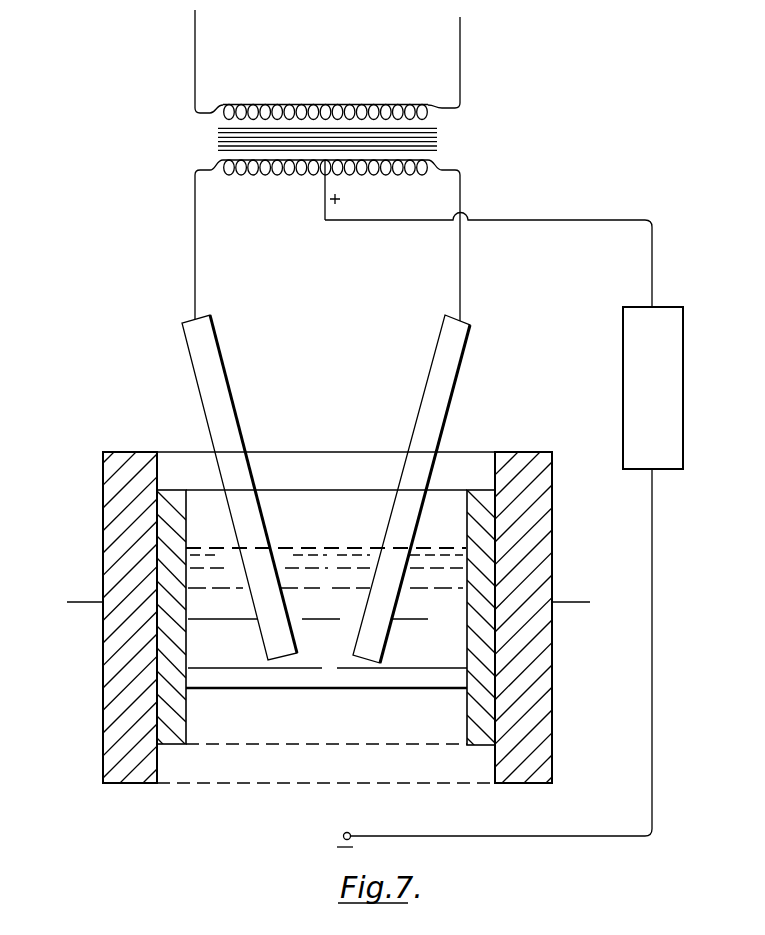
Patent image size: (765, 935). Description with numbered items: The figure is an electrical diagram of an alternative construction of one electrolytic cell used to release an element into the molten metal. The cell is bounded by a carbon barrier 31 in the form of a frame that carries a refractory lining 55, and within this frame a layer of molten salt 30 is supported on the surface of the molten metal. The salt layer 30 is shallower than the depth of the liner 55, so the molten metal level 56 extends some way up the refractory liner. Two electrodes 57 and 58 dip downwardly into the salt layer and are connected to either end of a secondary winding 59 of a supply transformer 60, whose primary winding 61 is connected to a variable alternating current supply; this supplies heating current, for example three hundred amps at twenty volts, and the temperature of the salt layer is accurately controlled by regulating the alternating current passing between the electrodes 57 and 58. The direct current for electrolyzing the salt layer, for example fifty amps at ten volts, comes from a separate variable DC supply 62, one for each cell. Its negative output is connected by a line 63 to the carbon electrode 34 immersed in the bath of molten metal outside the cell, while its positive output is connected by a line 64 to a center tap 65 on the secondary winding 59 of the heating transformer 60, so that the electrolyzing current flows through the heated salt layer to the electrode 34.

The layer of molten salt 30 is at (317, 557).
The carbon barrier 31 is at (540, 577).
The carbon electrode 34 is at (351, 823).
The refractory lining 55 is at (181, 500).
The molten metal level 56 is at (270, 688).
The electrode 57 is at (218, 385).
The electrode 58 is at (447, 392).
The secondary winding 59 is at (327, 240).
The supply transformer 60 is at (202, 141).
The primary winding 61 is at (341, 107).
The DC supply 62 is at (623, 372).
The line 63 is at (652, 536).
The line 64 is at (652, 262).
The center tap 65 is at (324, 172).